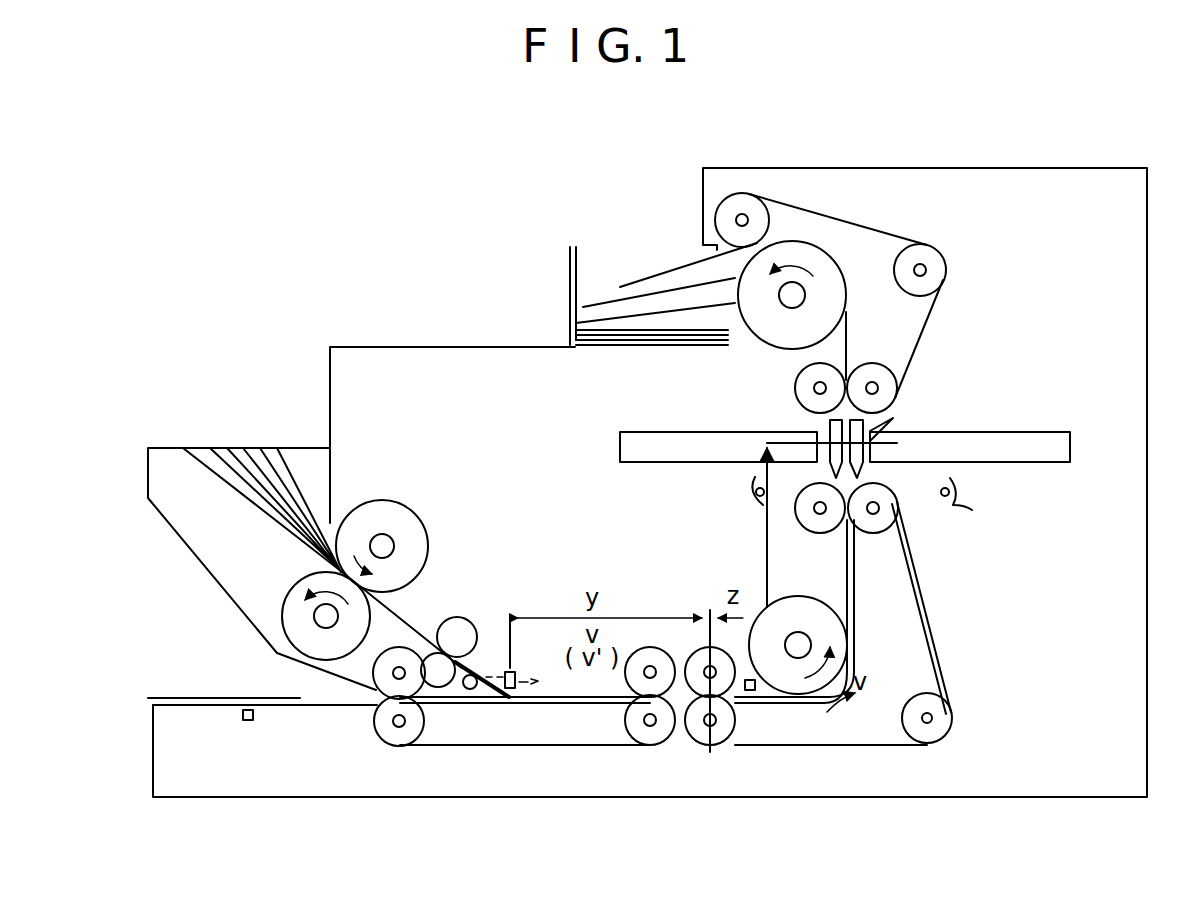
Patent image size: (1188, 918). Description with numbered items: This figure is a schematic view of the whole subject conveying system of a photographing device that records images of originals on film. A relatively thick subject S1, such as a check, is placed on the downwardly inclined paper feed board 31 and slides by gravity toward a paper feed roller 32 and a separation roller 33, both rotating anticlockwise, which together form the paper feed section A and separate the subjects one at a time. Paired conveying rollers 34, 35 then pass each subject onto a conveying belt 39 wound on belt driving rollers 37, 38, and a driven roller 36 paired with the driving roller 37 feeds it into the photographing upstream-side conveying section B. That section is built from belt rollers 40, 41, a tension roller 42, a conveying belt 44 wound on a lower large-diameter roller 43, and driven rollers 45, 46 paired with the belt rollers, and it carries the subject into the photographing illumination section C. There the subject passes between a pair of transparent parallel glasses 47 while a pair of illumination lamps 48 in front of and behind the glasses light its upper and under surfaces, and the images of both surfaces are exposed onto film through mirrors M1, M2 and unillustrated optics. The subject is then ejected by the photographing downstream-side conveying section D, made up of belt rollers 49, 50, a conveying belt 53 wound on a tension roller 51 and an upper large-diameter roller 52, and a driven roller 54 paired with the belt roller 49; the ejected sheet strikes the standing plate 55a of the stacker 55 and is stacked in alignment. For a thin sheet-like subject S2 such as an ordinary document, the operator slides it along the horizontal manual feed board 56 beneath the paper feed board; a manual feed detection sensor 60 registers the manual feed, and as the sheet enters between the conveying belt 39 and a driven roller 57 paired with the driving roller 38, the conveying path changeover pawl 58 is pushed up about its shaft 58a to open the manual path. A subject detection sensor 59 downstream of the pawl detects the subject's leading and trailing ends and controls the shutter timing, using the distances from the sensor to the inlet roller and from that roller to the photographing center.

The paper feed board 31 is at (203, 462).
The subject (original) S1 is at (290, 468).
The paper feed roller 32 is at (387, 516).
The separation roller 33 is at (298, 600).
The conveying roller 34 is at (458, 630).
The conveying roller 35 is at (441, 690).
The driven roller 57 is at (376, 676).
The belt driving roller 38 is at (396, 738).
The conveying belt 39 is at (556, 702).
The driven roller 36 is at (633, 682).
The belt driving roller 37 is at (660, 735).
The driven roller 45 is at (694, 680).
The belt roller 40 is at (722, 742).
The lower large-diameter roller 43 is at (805, 684).
The tension roller 42 is at (920, 734).
The conveying belt 44 is at (950, 695).
The belt roller 41 is at (876, 534).
The driven roller 46 is at (820, 534).
The transparent parallel glasses 47 is at (872, 431).
The mirror M1 is at (642, 447).
The mirror M2 is at (1012, 432).
The illumination lamp 48 is at (752, 502).
The driven roller 54 is at (797, 398).
The belt roller 49 is at (878, 372).
The upper large-diameter roller 52 is at (818, 263).
The belt roller 50 is at (753, 212).
The tension roller 51 is at (930, 260).
The conveying belt 53 is at (883, 230).
The standing plate 55a is at (573, 247).
The stacker 55 is at (608, 345).
The shaft 58a is at (475, 673).
The conveying path changeover pawl 58 is at (485, 702).
The subject detection sensor 59 is at (517, 673).
The manual feed detection sensor 60 is at (249, 724).
The manual feed board 56 is at (151, 715).
The subject (original) S2 is at (188, 702).
The paper feed section A is at (453, 562).
The photographing upstream-side conveying section B is at (942, 621).
The photographing illumination section C is at (1015, 477).
The photographing downstream-side conveying section D is at (968, 268).